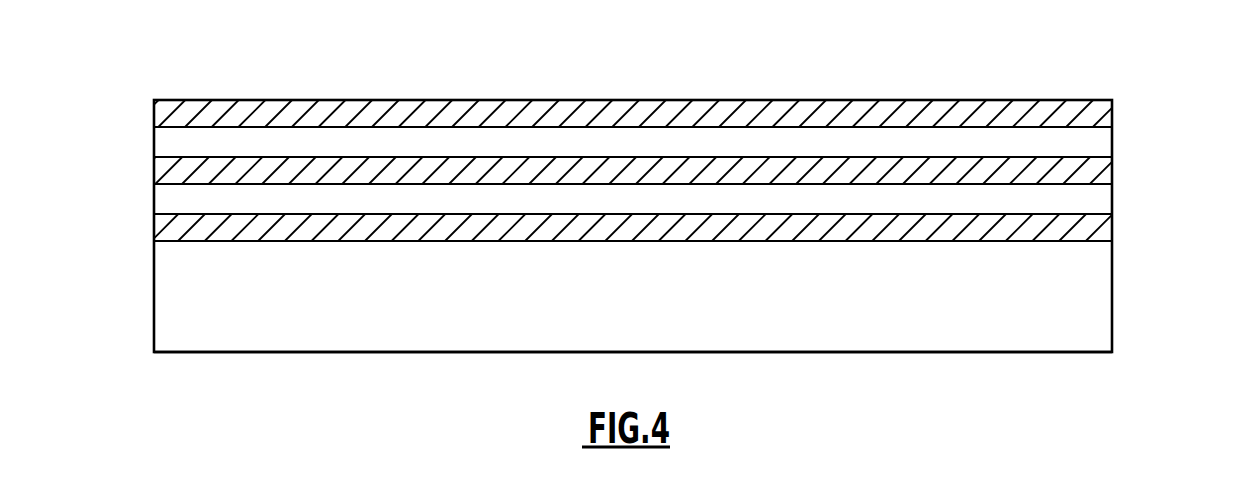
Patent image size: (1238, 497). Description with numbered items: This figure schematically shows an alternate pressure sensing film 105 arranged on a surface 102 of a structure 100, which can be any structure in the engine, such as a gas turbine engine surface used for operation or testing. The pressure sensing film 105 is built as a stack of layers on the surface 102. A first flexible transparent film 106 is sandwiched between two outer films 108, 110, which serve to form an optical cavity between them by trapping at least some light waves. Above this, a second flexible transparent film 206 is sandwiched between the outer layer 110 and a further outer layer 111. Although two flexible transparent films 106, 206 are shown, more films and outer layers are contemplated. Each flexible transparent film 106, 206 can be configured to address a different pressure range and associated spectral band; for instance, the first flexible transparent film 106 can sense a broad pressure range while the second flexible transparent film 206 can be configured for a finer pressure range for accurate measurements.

The pressure sensing film 105 is at (122, 68).
The outer layer 111 is at (1107, 114).
The second flexible transparent film 206 is at (1107, 143).
The outer film 110 is at (1107, 172).
The flexible transparent film 106 is at (1107, 201).
The outer film 108 is at (1107, 231).
The surface 102 is at (1088, 242).
The structure 100 is at (1051, 353).